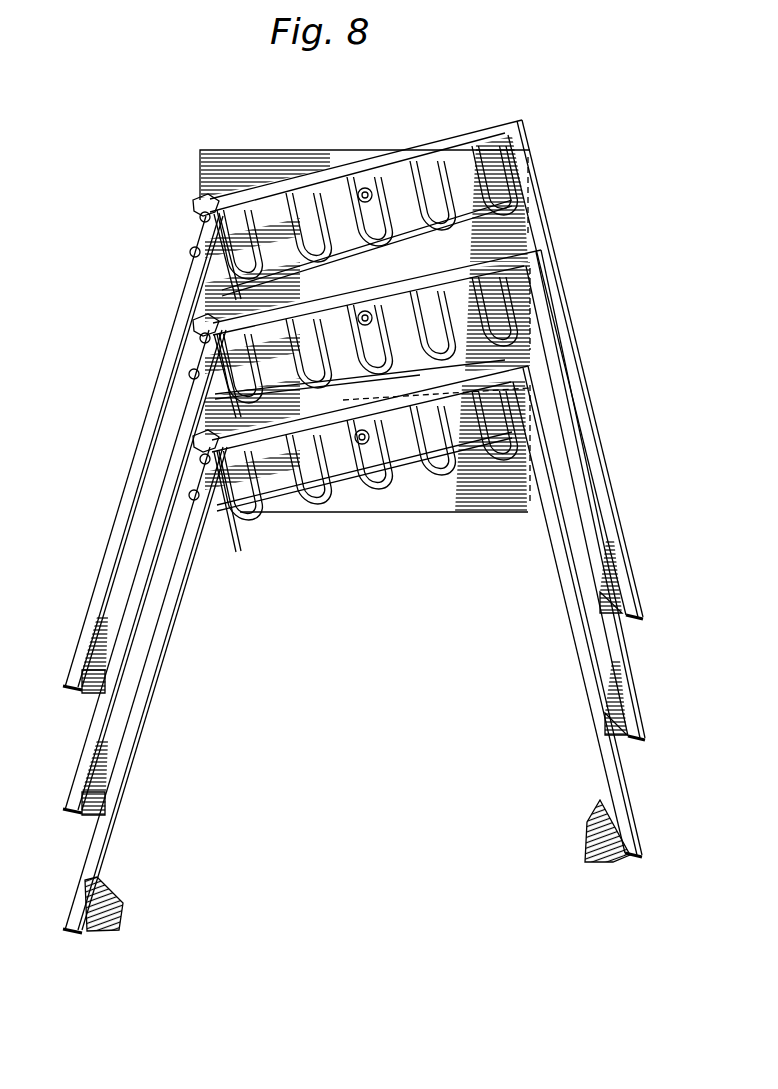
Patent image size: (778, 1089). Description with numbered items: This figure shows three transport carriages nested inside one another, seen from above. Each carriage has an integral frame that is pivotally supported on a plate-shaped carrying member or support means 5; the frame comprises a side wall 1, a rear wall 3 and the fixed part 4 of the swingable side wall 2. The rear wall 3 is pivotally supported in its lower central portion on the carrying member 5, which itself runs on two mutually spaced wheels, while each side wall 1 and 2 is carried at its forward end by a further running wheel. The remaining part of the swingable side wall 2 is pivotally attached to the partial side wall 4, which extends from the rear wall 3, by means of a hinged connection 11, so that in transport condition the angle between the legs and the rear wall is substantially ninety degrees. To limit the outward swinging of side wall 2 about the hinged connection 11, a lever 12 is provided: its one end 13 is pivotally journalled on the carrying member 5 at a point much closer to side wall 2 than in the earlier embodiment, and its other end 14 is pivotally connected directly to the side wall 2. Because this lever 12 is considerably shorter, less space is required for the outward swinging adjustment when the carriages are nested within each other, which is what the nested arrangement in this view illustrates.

The side wall 1 is at (593, 440).
The swingable side wall 2 is at (87, 868).
The rear wall 3 is at (400, 148).
The fixed part of the swingable side wall 4 is at (197, 207).
The carrying member 5 is at (242, 162).
The hinged connection 11 is at (198, 217).
The lever 12 is at (255, 507).
The end of lever 13 is at (285, 505).
The end of lever 14 is at (210, 510).